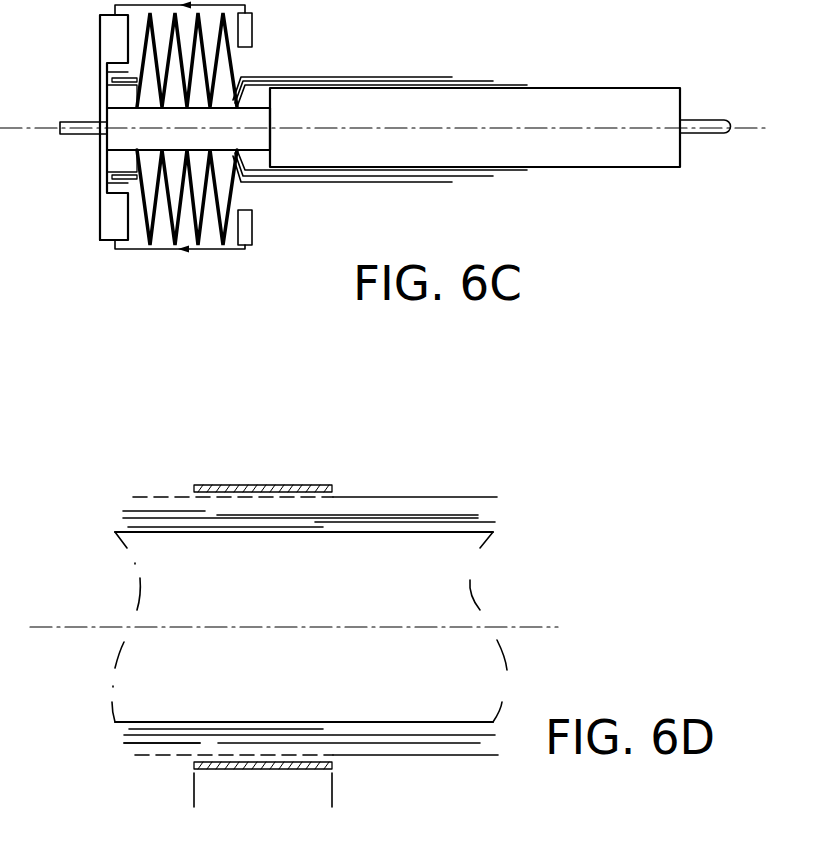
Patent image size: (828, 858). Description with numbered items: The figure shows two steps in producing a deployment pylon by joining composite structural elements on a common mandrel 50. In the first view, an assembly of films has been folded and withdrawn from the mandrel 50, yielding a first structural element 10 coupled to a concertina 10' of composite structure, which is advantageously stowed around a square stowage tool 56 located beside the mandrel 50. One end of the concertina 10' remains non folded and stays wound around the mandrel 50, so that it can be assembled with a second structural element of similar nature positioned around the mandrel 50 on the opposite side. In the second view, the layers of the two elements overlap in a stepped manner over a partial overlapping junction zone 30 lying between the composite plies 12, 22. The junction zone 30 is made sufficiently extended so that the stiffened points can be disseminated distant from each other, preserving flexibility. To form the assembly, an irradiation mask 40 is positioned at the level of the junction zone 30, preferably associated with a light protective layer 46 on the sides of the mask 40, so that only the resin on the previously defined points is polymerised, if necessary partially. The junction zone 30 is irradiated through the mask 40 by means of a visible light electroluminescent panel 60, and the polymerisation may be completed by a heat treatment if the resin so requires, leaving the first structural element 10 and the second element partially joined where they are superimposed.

In FIG. 6C, the first structural element 10 is at (332, 60).
In FIG. 6C, the concertina of composite structure 10' is at (332, 226).
In FIG. 6C, the mandrel 50 is at (648, 155).
In FIG. 6D, the mandrel 50 is at (457, 595).
In FIG. 6C, the square stowage tool 56 is at (123, 142).
In FIG. 6D, the visible light electroluminescent panel 60 is at (222, 485).
In FIG. 6D, the irradiation mask 40 is at (265, 498).
In FIG. 6D, the composite ply 12 is at (160, 737).
In FIG. 6D, the junction zone 30 is at (332, 788).
In FIG. 6D, the light protective layer 46 is at (408, 757).
In FIG. 6D, the composite ply 22 is at (467, 743).